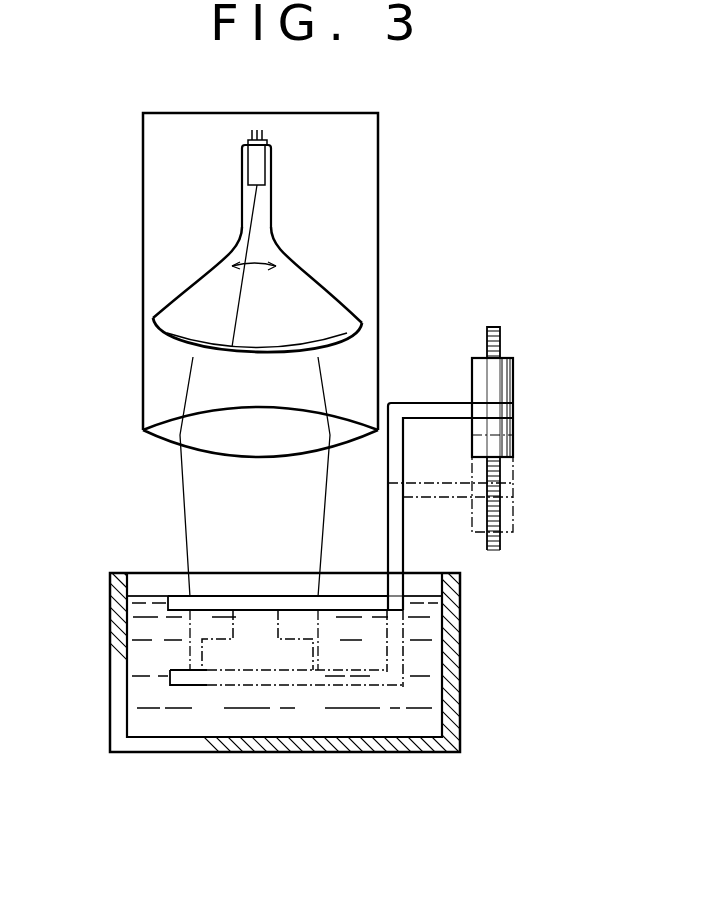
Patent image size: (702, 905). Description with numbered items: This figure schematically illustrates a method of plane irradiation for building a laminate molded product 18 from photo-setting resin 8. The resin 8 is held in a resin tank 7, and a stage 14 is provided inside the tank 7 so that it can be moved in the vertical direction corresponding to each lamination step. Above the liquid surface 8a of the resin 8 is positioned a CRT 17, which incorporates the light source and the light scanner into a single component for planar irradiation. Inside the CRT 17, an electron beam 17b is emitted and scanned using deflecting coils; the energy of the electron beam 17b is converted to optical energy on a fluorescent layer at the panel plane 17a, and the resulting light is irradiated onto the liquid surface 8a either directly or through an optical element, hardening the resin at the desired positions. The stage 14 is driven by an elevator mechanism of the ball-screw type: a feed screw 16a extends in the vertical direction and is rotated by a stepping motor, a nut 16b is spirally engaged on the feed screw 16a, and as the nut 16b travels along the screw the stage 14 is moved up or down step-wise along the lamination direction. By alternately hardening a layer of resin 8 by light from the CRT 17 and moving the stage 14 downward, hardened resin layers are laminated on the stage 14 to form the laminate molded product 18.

The resin tank 7 is at (112, 607).
The photo-setting resin 8 is at (418, 705).
The liquid surface 8a is at (155, 594).
The stage 14 is at (212, 603).
The feed screw 16a is at (500, 343).
The nut 16b is at (508, 433).
The CRT 17 is at (291, 265).
The panel plane 17a is at (230, 352).
The electron beam 17b is at (240, 306).
The laminate molded product 18 is at (298, 665).